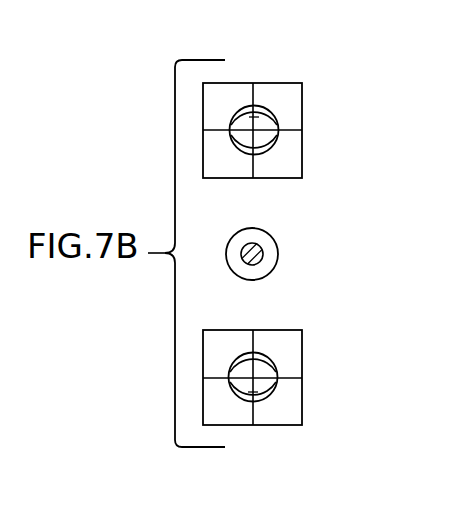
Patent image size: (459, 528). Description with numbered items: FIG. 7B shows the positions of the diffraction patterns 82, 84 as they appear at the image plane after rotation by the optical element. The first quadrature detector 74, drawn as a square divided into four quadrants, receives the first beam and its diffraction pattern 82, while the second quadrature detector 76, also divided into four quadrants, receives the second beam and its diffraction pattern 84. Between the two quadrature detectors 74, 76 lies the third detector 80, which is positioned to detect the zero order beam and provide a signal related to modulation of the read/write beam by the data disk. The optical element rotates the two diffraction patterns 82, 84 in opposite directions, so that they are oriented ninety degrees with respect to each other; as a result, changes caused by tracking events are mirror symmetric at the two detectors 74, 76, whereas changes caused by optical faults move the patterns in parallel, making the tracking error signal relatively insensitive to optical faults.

The first quadrature detector 74 is at (303, 110).
The second quadrature detector 76 is at (303, 396).
The third detector 80 is at (277, 247).
The diffraction pattern of the first beam 82 is at (265, 101).
The diffraction pattern of the second beam 84 is at (263, 403).